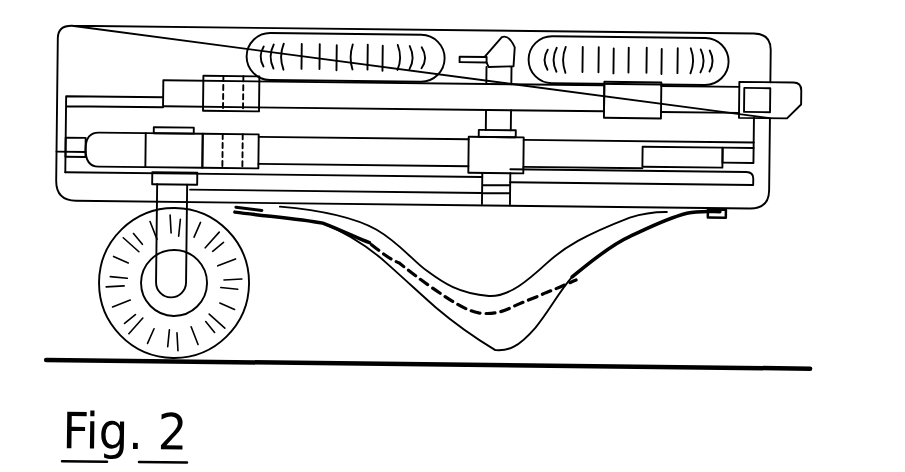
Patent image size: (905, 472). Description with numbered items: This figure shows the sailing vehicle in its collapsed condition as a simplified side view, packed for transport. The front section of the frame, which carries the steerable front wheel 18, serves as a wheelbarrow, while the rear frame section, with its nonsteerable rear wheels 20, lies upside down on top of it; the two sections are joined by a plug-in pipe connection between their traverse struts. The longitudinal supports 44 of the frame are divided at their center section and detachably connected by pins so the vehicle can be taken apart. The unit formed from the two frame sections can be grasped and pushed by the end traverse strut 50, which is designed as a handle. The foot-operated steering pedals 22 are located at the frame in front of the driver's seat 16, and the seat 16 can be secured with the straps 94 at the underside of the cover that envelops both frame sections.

The driver's seat 16 is at (540, 326).
The front wheel 18 is at (232, 310).
The rear wheels 20 is at (718, 61).
The steering pedals 22 is at (485, 64).
The longitudinal supports 44 is at (673, 95).
The traverse struts 50 is at (782, 99).
The straps 94 is at (688, 215).